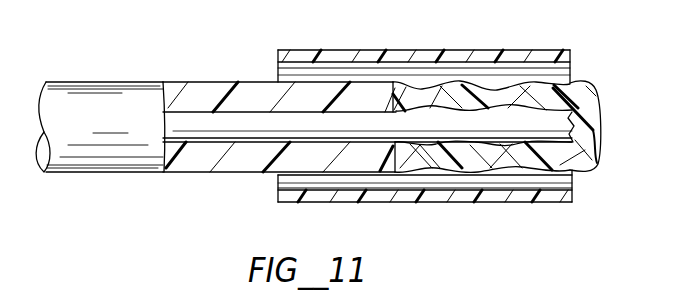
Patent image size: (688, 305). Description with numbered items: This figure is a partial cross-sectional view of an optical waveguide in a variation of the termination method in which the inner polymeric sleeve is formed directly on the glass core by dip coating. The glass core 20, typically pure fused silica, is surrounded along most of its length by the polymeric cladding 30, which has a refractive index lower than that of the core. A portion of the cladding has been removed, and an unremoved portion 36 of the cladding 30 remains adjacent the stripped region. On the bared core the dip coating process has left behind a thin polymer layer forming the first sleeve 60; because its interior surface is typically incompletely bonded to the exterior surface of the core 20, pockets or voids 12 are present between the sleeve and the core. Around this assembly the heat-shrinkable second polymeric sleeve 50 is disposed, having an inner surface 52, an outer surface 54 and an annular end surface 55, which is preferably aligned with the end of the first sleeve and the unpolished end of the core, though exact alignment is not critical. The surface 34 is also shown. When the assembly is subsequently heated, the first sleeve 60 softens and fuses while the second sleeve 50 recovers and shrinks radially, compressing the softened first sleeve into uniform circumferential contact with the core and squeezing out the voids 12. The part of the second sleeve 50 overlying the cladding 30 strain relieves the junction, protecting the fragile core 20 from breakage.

The pockets or voids 12 is at (495, 146).
The glass core 20 is at (193, 127).
The polymeric cladding 30 is at (192, 92).
The outer jacket surface 34 is at (232, 84).
The unremoved portion of the cladding 36 is at (405, 170).
The second polymeric sleeve 50 is at (361, 57).
The inner surface 52 is at (280, 66).
The outer surface 54 is at (446, 53).
The annular end surface 55 is at (577, 54).
The first sleeve 60 is at (592, 102).